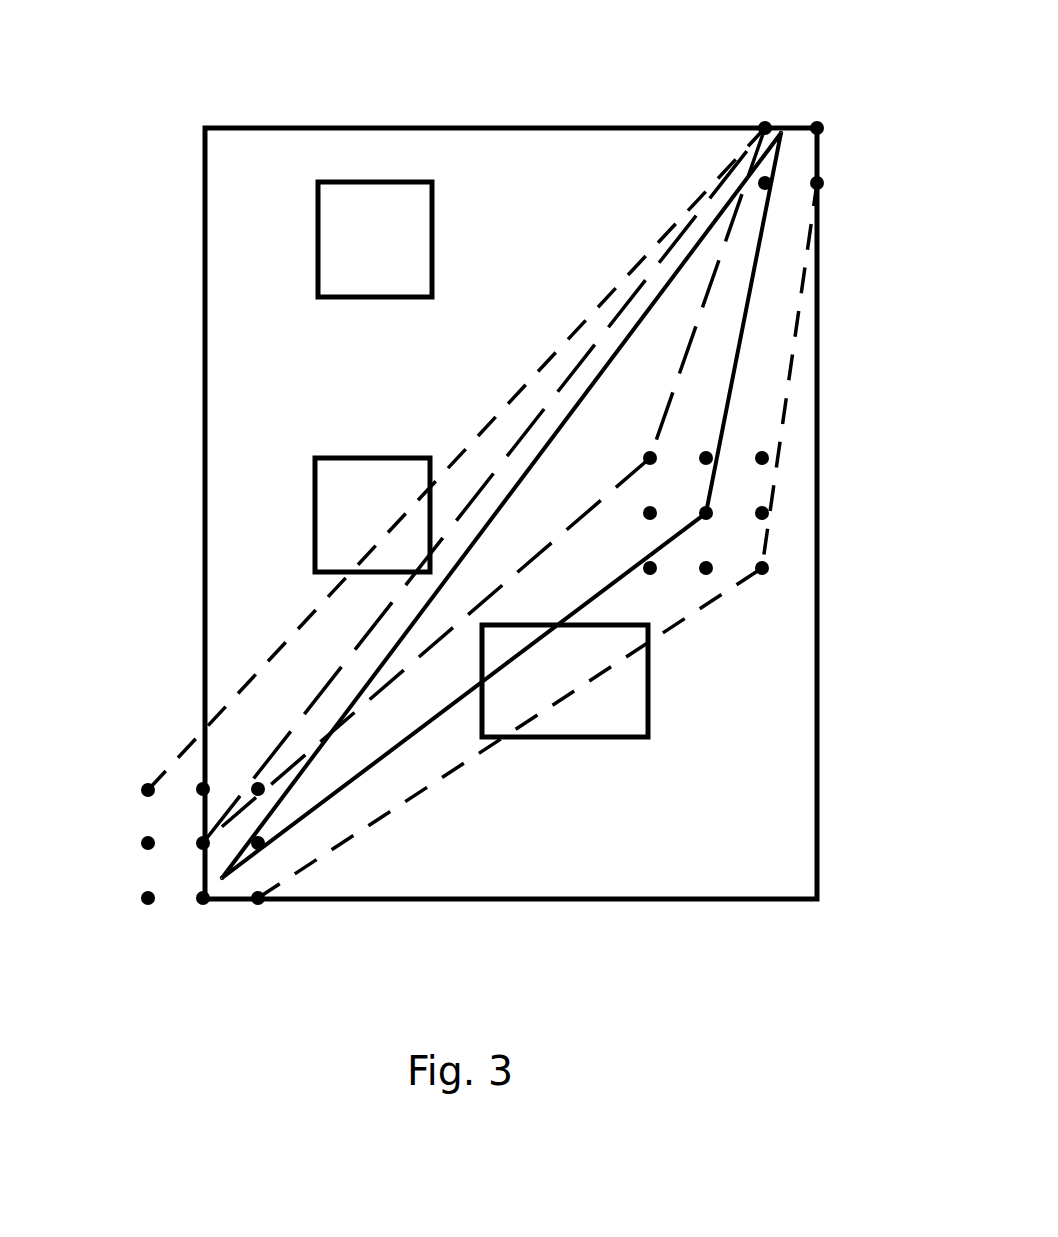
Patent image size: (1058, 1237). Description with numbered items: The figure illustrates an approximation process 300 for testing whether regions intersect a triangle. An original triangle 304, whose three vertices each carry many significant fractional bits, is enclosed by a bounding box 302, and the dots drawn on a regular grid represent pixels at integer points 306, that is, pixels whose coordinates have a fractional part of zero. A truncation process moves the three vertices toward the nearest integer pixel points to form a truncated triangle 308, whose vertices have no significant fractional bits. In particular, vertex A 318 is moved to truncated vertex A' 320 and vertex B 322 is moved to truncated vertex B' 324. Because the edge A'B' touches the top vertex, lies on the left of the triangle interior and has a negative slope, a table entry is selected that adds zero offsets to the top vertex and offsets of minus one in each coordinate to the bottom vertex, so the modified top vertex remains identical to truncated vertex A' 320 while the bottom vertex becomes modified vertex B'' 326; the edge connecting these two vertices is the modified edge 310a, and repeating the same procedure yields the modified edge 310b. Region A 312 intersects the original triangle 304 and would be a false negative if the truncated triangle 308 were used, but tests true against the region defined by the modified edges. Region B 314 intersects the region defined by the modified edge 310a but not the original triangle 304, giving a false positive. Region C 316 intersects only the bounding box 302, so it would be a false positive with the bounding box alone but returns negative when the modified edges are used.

The approximation process 300 is at (190, 114).
The bounding box 302 is at (553, 901).
The original triangle 304 is at (677, 277).
The pixels at integer points 306 is at (150, 905).
The truncated triangle 308 is at (538, 409).
The modified edge 310a is at (466, 445).
The modified edge 310b is at (403, 808).
The region A 312 is at (649, 715).
The region B 314 is at (314, 533).
The region C 316 is at (317, 252).
The vertex A 318 is at (779, 132).
The truncated vertex A' 320 is at (765, 124).
The vertex B 322 is at (222, 880).
The truncated vertex B' 324 is at (203, 849).
The modified vertex B'' 326 is at (149, 785).